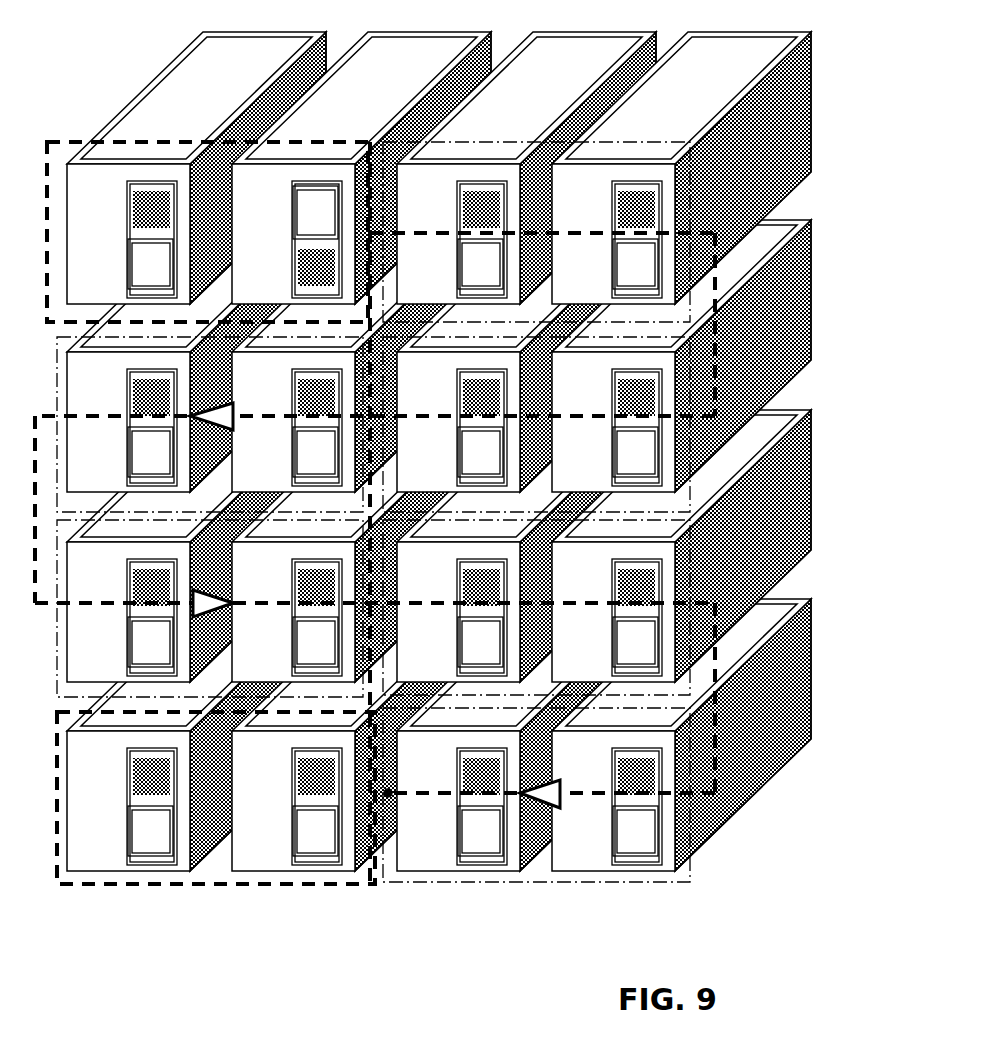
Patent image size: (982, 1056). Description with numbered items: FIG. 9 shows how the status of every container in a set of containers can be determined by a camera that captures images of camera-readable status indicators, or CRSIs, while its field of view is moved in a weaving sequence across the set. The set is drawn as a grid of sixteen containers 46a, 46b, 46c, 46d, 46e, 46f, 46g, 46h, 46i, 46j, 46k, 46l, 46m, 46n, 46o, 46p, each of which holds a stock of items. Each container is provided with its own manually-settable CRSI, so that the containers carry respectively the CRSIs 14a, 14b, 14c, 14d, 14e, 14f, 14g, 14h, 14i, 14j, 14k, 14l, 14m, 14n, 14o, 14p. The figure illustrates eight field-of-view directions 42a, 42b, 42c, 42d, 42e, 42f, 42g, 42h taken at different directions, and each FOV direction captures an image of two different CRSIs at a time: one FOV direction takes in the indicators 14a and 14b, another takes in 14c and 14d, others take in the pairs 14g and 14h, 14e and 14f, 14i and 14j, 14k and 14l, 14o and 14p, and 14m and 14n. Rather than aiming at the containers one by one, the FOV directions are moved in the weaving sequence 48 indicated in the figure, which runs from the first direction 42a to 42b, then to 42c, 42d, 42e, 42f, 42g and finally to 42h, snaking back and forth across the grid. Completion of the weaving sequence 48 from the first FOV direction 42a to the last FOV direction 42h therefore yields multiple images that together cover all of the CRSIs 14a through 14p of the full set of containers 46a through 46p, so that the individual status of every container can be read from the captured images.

The container 46a is at (107, 195).
The container 46b is at (272, 195).
The container 46c is at (436, 195).
The container 46d is at (592, 195).
The container 46e is at (107, 383).
The container 46f is at (268, 383).
The container 46g is at (437, 383).
The container 46h is at (592, 383).
The container 46i is at (100, 573).
The container 46j is at (265, 573).
The container 46k is at (436, 573).
The container 46l is at (585, 573).
The container 46m is at (110, 762).
The container 46n is at (272, 762).
The container 46o is at (437, 762).
The container 46p is at (592, 762).
The camera-readable status indicator 14a is at (137, 261).
The camera-readable status indicator 14b is at (302, 212).
The camera-readable status indicator 14c is at (467, 261).
The camera-readable status indicator 14d is at (622, 261).
The camera-readable status indicator 14e is at (137, 449).
The camera-readable status indicator 14f is at (302, 449).
The camera-readable status indicator 14g is at (467, 449).
The camera-readable status indicator 14h is at (622, 449).
The camera-readable status indicator 14i is at (137, 639).
The camera-readable status indicator 14j is at (302, 639).
The camera-readable status indicator 14k is at (467, 639).
The camera-readable status indicator 14l is at (622, 639).
The camera-readable status indicator 14m is at (137, 828).
The camera-readable status indicator 14n is at (302, 828).
The camera-readable status indicator 14o is at (467, 828).
The camera-readable status indicator 14p is at (622, 828).
The FOV direction 42a is at (72, 140).
The FOV direction 42b is at (690, 192).
The FOV direction 42c is at (581, 424).
The FOV direction 42d is at (185, 424).
The FOV direction 42e is at (186, 608).
The FOV direction 42f is at (688, 583).
The FOV direction 42g is at (568, 795).
The FOV direction 42h is at (218, 888).
The weaving sequence 48 is at (402, 513).